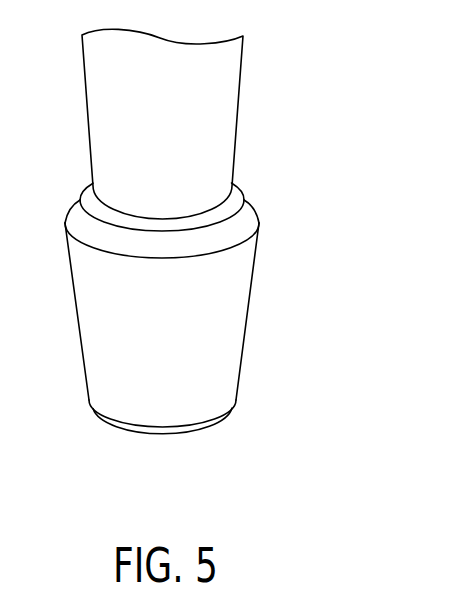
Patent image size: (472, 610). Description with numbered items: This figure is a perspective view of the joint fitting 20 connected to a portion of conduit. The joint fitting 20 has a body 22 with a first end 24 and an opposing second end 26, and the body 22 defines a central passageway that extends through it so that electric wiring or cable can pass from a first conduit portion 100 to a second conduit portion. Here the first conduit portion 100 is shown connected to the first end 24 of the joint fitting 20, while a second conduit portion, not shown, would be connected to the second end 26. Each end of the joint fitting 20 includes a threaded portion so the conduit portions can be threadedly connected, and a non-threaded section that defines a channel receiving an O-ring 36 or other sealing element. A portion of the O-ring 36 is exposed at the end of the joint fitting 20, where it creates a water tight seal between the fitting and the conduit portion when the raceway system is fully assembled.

The first conduit portion 100 is at (222, 100).
The joint fitting 20 is at (280, 312).
The body 22 is at (222, 379).
The first end 24 is at (201, 209).
The second end 26 is at (198, 453).
The O-ring 36 is at (226, 199).